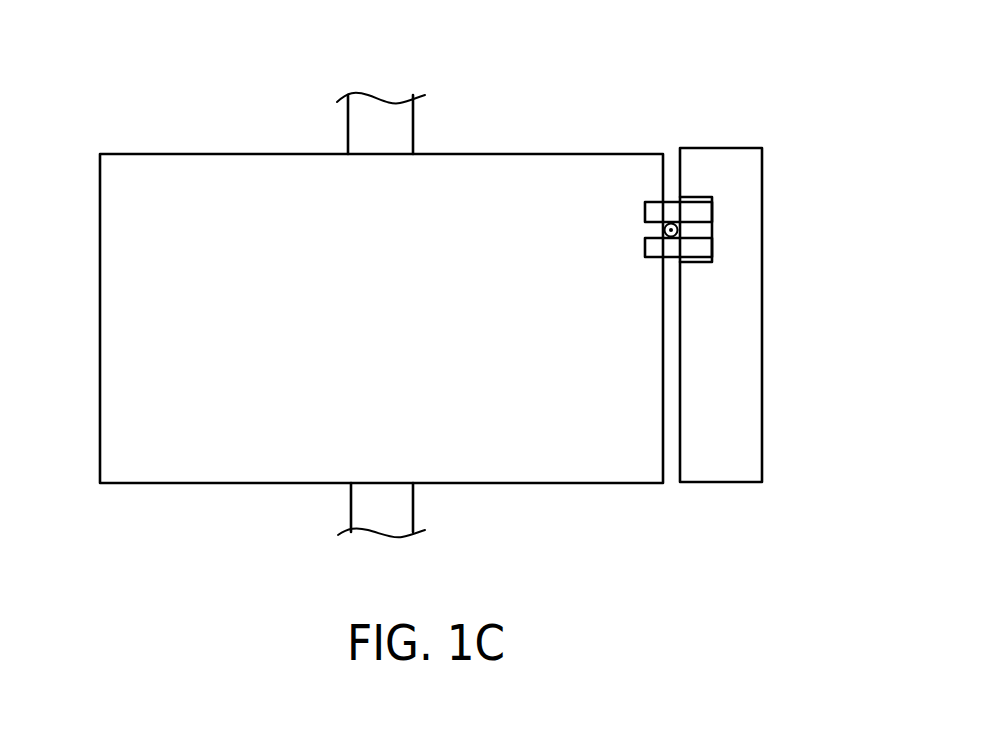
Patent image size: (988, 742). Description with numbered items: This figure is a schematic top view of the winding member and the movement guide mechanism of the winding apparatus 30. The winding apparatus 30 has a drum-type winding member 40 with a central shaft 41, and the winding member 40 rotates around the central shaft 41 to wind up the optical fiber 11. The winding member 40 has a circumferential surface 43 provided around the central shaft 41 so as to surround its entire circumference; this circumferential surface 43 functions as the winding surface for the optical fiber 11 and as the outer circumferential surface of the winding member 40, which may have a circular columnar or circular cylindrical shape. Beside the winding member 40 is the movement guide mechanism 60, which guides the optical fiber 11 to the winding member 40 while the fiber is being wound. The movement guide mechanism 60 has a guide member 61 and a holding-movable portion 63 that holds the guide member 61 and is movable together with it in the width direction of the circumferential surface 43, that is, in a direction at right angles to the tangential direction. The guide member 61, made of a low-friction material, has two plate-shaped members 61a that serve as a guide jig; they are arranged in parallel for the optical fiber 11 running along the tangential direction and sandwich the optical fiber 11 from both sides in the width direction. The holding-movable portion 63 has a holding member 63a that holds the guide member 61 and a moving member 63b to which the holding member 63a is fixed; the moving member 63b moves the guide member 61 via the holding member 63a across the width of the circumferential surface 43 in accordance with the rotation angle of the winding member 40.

The winding apparatus 30 is at (138, 55).
The winding member 40 is at (130, 433).
The central shaft 41 is at (358, 503).
The circumferential surface 43 is at (100, 360).
The movement guide mechanism 60 is at (810, 148).
The holding-movable portion 63 is at (772, 93).
The holding member 63a is at (696, 203).
The moving member 63b is at (747, 162).
The guide member 61 is at (703, 212).
The plate-shaped member 61a is at (703, 248).
The optical fiber 11 is at (681, 226).